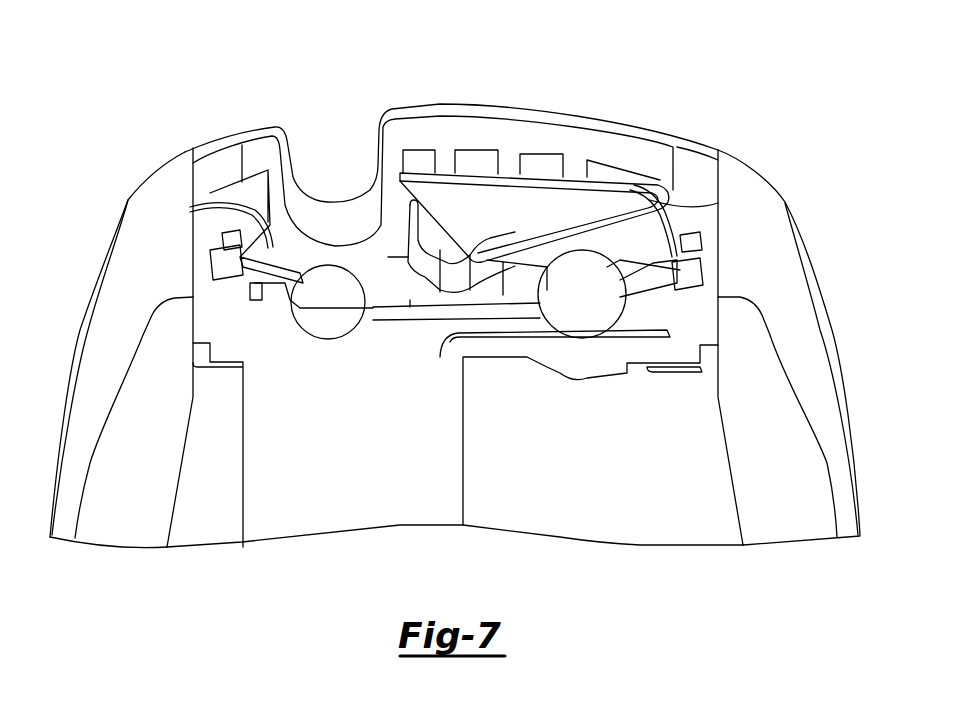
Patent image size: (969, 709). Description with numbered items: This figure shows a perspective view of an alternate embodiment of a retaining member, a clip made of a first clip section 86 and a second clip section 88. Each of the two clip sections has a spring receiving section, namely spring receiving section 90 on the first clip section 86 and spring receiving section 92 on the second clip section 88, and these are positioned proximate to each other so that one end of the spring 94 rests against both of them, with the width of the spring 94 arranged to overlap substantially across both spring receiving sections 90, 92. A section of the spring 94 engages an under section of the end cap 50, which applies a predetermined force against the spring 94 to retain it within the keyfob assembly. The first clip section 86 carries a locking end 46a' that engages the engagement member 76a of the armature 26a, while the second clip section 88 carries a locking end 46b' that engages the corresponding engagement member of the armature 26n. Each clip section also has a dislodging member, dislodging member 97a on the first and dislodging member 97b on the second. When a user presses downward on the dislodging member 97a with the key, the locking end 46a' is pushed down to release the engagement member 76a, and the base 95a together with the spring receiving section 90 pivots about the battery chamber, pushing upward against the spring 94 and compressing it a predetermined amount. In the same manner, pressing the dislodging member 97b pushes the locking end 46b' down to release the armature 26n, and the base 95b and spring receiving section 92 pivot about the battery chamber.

The armature 26n is at (93, 283).
The armature 26a is at (817, 287).
The end cap 50 is at (610, 122).
The spring 94 is at (535, 163).
The first clip section 86 is at (610, 263).
The spring receiving section 92 is at (410, 272).
The spring receiving section 90 is at (475, 303).
The base 95b is at (328, 313).
The base 95a is at (578, 317).
The locking end 46b' is at (225, 226).
The dislodging member 97b is at (226, 268).
The second clip section 88 is at (265, 257).
The engagement member 76a is at (688, 220).
The locking end 46a' is at (727, 240).
The dislodging member 97a is at (690, 275).